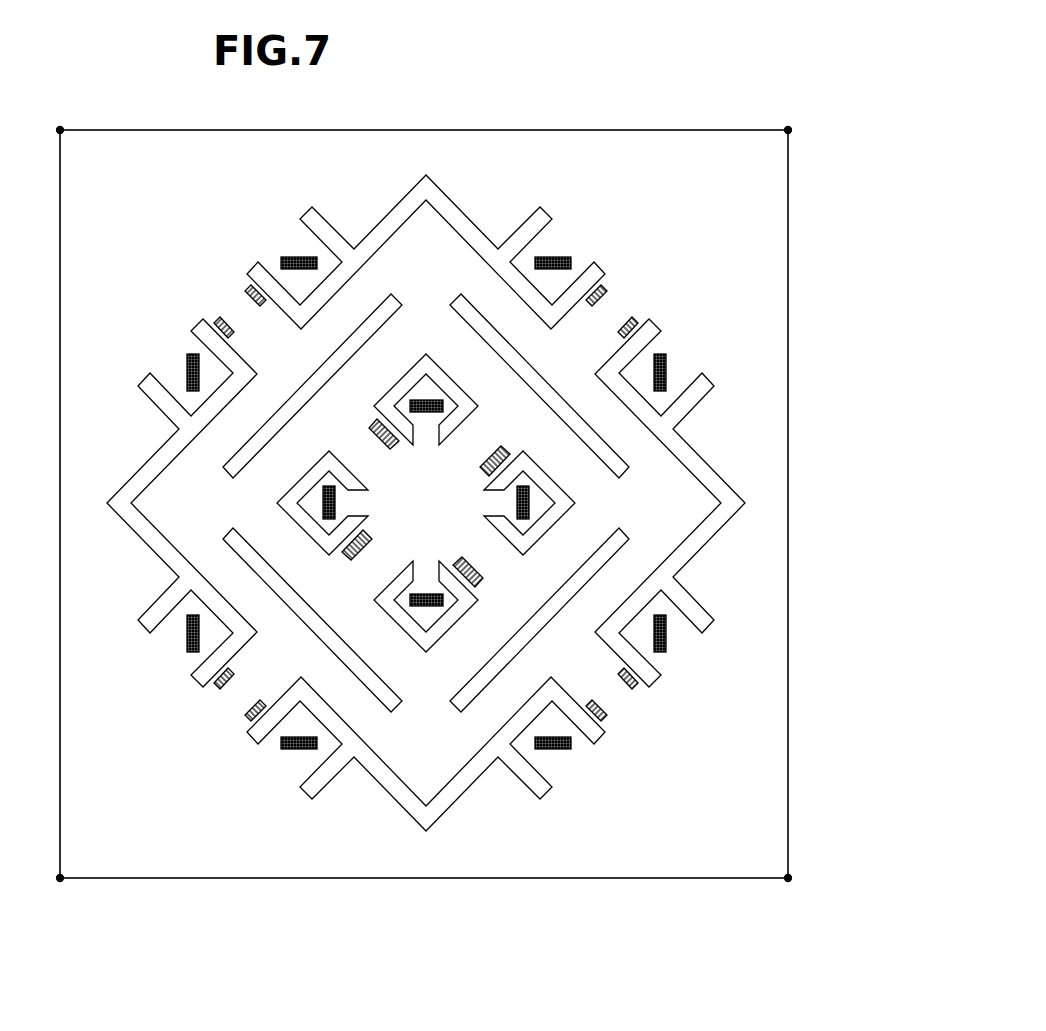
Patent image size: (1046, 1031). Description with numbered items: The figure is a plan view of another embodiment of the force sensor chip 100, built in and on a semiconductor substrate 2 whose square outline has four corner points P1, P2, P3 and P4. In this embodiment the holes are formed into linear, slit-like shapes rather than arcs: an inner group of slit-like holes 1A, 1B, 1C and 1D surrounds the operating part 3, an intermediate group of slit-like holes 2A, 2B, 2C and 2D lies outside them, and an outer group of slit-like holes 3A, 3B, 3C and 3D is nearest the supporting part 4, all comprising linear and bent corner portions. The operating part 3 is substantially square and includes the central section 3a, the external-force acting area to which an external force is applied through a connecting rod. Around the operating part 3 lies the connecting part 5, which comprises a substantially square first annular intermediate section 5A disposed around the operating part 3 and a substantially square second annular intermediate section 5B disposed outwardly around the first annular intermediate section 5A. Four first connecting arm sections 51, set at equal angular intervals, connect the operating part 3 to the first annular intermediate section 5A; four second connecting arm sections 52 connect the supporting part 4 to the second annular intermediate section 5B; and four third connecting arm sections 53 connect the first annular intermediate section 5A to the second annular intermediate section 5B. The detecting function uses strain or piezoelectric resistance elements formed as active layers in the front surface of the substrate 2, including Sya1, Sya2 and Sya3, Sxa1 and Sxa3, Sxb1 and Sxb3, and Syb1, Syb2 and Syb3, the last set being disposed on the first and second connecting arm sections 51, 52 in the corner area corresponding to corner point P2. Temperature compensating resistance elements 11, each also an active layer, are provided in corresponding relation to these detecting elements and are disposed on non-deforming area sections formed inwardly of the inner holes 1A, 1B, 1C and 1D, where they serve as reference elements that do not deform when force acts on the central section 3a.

The force sensor chip 100 is at (798, 172).
The semiconductor substrate 2 is at (757, 229).
The supporting part 4 is at (768, 293).
The operating part 3 is at (453, 527).
The central section 3a is at (412, 516).
The slit-like hole 3A is at (400, 212).
The slit-like hole 3B is at (735, 496).
The slit-like hole 3C is at (443, 805).
The slit-like hole 3D is at (128, 488).
The slit-like hole 2A is at (467, 315).
The slit-like hole 2B is at (613, 548).
The slit-like hole 2C is at (382, 692).
The slit-like hole 2D is at (397, 298).
The slit-like hole 1A is at (401, 373).
The slit-like hole 1B is at (541, 520).
The slit-like hole 1C is at (412, 628).
The slit-like hole 1D is at (322, 470).
The temperature compensating resistance element 11 is at (299, 256).
The connecting part 5 is at (456, 266).
The first annular intermediate section 5A is at (592, 495).
The second annular intermediate section 5B is at (612, 423).
The first connecting arm section 51 is at (357, 440).
The second connecting arm section 52 is at (262, 337).
The third connecting arm section 53 is at (432, 293).
The resistance element Sya1 is at (230, 280).
The resistance element Sya2 is at (456, 447).
The resistance element Sya3 is at (194, 313).
The resistance element Sxa1 is at (655, 313).
The resistance element Sxa3 is at (622, 279).
The resistance element Sxb1 is at (198, 695).
The resistance element Sxb3 is at (232, 728).
The resistance element Syb1 is at (627, 728).
The resistance element Syb2 is at (423, 567).
The resistance element Syb3 is at (657, 695).
The corner point P1 is at (787, 118).
The corner point P2 is at (787, 890).
The corner point P3 is at (67, 890).
The corner point P4 is at (67, 118).